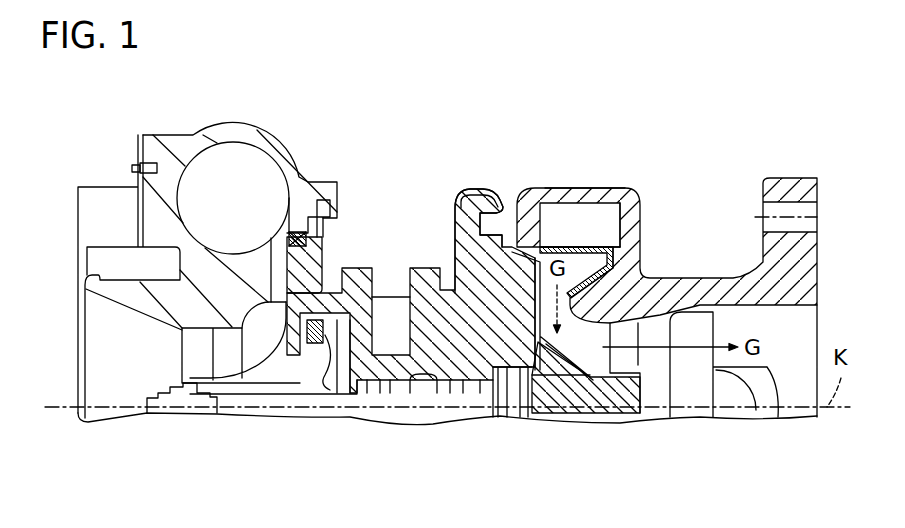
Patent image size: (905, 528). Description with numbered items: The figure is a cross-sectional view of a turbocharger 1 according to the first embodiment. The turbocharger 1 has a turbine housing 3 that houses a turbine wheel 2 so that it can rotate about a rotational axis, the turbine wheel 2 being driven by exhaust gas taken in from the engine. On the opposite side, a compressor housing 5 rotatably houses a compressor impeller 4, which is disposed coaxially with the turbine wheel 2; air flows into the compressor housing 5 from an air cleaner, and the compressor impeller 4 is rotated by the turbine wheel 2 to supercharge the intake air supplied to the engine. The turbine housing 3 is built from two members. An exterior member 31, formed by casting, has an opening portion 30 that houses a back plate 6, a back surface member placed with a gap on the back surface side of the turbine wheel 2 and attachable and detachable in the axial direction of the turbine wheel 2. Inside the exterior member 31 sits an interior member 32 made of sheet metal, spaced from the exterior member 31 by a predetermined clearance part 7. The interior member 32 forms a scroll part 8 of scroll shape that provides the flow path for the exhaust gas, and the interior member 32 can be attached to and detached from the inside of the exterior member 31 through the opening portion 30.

The turbocharger 1 is at (498, 77).
The turbine wheel 2 is at (583, 423).
The turbine housing 3 is at (623, 158).
The compressor impeller 4 is at (266, 383).
The compressor housing 5 is at (265, 128).
The back plate 6 is at (526, 242).
The clearance part 7 is at (607, 212).
The scroll part 8 is at (592, 262).
The opening portion 30 is at (525, 276).
The exterior member 31 is at (591, 186).
The interior member 32 is at (580, 242).